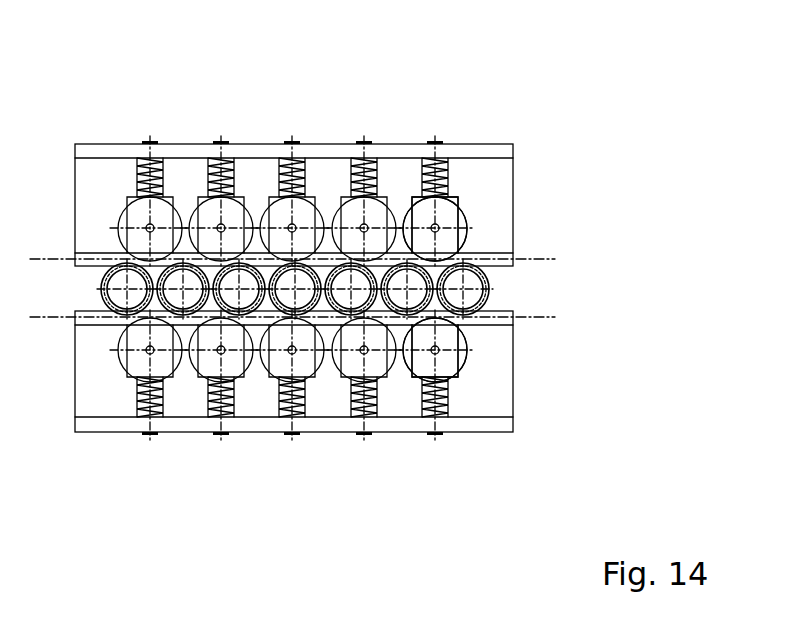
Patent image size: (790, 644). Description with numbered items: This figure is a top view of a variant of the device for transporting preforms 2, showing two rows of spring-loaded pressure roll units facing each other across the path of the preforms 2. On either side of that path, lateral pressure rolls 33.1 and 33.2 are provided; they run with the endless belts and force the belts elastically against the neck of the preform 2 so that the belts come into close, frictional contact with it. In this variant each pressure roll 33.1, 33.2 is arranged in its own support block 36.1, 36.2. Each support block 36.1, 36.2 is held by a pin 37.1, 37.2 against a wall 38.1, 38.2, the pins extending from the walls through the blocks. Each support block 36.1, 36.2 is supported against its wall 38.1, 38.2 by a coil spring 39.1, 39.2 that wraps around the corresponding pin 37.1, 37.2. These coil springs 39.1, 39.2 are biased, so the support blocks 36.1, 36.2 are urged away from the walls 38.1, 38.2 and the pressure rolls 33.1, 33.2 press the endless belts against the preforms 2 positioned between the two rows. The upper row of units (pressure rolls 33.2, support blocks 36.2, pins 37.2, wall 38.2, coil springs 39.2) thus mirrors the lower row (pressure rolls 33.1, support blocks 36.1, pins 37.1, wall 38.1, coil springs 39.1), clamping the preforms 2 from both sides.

The preform 2 is at (483, 283).
The pressure roll 33.1 is at (467, 338).
The pressure roll 33.2 is at (465, 227).
The support block 36.1 is at (453, 357).
The support block 36.2 is at (453, 210).
The pin 37.1 is at (293, 435).
The pin 37.2 is at (293, 143).
The wall 38.1 is at (185, 435).
The wall 38.2 is at (322, 145).
The coil spring 39.1 is at (363, 433).
The coil spring 39.2 is at (437, 175).